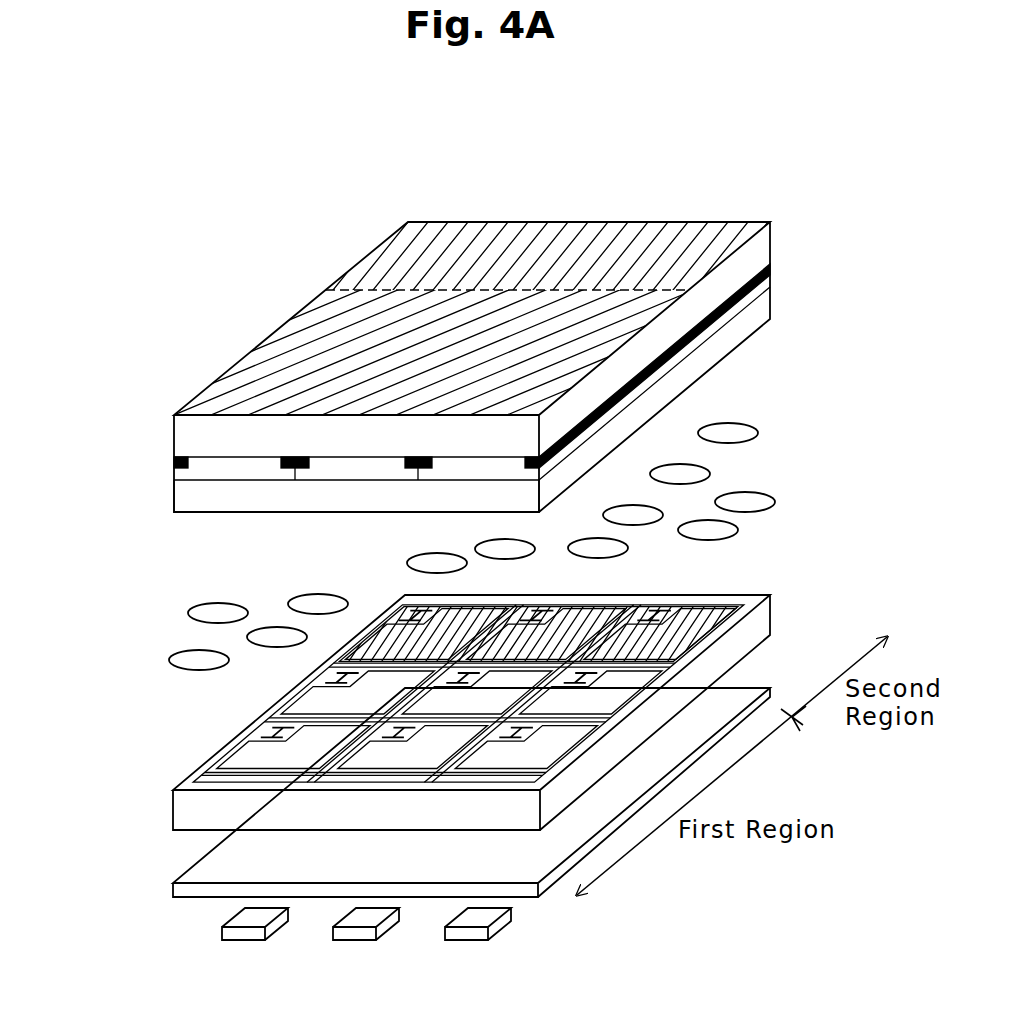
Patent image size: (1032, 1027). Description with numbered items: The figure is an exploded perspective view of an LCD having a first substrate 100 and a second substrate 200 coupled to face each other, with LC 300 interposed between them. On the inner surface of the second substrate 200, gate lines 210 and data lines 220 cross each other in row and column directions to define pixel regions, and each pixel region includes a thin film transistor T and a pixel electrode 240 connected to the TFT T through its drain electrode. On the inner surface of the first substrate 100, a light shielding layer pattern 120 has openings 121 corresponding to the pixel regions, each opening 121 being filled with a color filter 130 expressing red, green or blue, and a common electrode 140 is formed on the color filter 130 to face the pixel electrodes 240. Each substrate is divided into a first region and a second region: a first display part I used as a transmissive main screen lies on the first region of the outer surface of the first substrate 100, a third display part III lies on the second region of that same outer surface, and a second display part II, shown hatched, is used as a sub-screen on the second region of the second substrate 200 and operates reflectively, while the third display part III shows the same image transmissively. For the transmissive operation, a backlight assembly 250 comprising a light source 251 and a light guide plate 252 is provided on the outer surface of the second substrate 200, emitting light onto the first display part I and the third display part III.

The first substrate 100 is at (179, 427).
The light shielding layer pattern 120 is at (771, 270).
The openings 121 is at (284, 468).
The color filter 130 is at (179, 471).
The common electrode 140 is at (179, 494).
The second substrate 200 is at (179, 808).
The gate lines 210 is at (716, 607).
The data lines 220 is at (745, 623).
The pixel electrode 240 is at (497, 757).
The backlight assembly 250 is at (405, 817).
The light source 251 is at (224, 932).
The light guide plate 252 is at (180, 887).
The LC 300 is at (776, 501).
The thin film transistor T is at (235, 742).
The first display part I is at (270, 338).
The second display part II is at (388, 612).
The third display part III is at (390, 252).